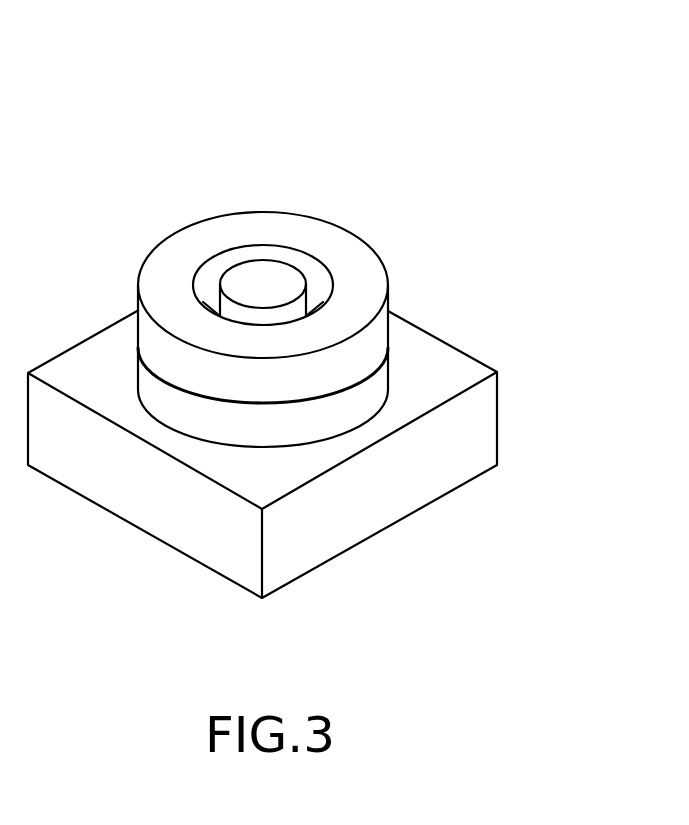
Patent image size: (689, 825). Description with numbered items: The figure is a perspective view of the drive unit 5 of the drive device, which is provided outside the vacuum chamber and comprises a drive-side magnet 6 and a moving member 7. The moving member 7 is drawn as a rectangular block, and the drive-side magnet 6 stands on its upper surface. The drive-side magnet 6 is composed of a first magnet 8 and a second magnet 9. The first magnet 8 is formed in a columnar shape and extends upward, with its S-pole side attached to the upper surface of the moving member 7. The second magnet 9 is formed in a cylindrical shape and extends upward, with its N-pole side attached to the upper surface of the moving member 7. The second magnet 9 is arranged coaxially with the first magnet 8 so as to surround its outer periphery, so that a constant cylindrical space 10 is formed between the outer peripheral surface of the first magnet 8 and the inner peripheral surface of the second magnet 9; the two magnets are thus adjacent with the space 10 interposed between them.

The drive unit 5 is at (308, 335).
The drive-side magnet 6 is at (298, 234).
The moving member 7 is at (497, 422).
The first magnet 8 is at (277, 273).
The second magnet 9 is at (377, 247).
The space 10 is at (213, 277).